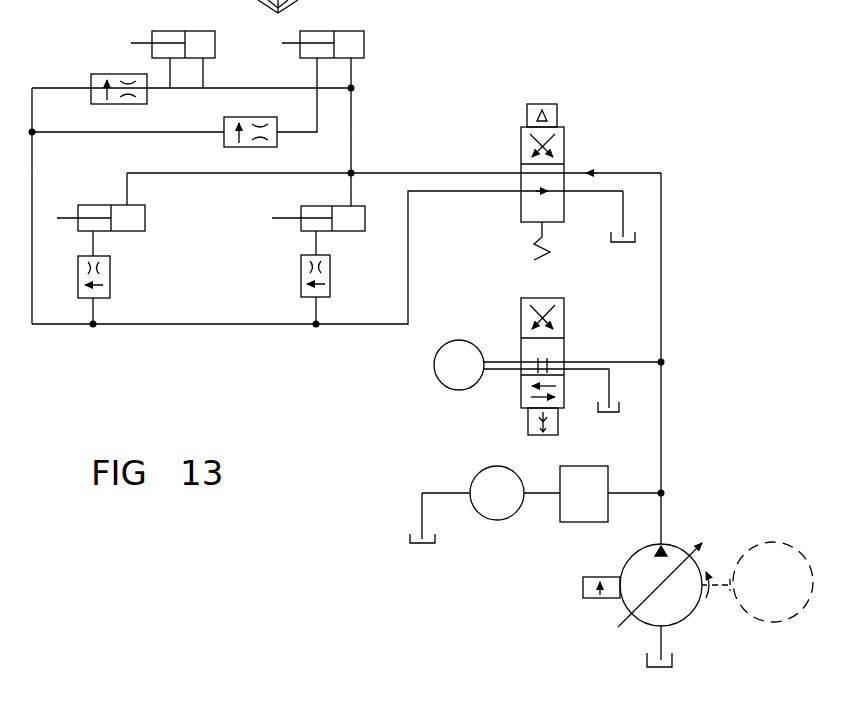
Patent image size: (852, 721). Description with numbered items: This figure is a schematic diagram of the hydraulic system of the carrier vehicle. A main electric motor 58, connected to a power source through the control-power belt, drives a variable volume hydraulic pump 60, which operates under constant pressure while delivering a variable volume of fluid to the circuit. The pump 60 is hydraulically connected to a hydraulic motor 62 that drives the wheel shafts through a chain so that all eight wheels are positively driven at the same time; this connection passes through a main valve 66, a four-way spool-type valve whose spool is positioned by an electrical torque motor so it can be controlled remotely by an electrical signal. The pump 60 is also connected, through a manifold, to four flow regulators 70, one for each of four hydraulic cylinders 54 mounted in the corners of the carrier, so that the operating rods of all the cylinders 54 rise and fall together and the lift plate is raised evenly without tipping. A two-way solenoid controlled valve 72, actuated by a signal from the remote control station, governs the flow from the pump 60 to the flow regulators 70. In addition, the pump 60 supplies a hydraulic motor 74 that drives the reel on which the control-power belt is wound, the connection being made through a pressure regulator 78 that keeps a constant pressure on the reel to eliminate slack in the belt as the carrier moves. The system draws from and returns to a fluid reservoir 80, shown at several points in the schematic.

The hydraulic cylinder 54 is at (165, 31).
The main electric motor 58 is at (757, 547).
The variable volume hydraulic pump 60 is at (674, 546).
The hydraulic motor 62 is at (434, 367).
The main valve 66 is at (566, 315).
The flow regulator 70 is at (133, 104).
The two-way solenoid controlled valve 72 is at (566, 145).
The hydraulic motor 74 is at (479, 471).
The pressure regulator 78 is at (598, 466).
The fluid reservoir 80 is at (612, 244).